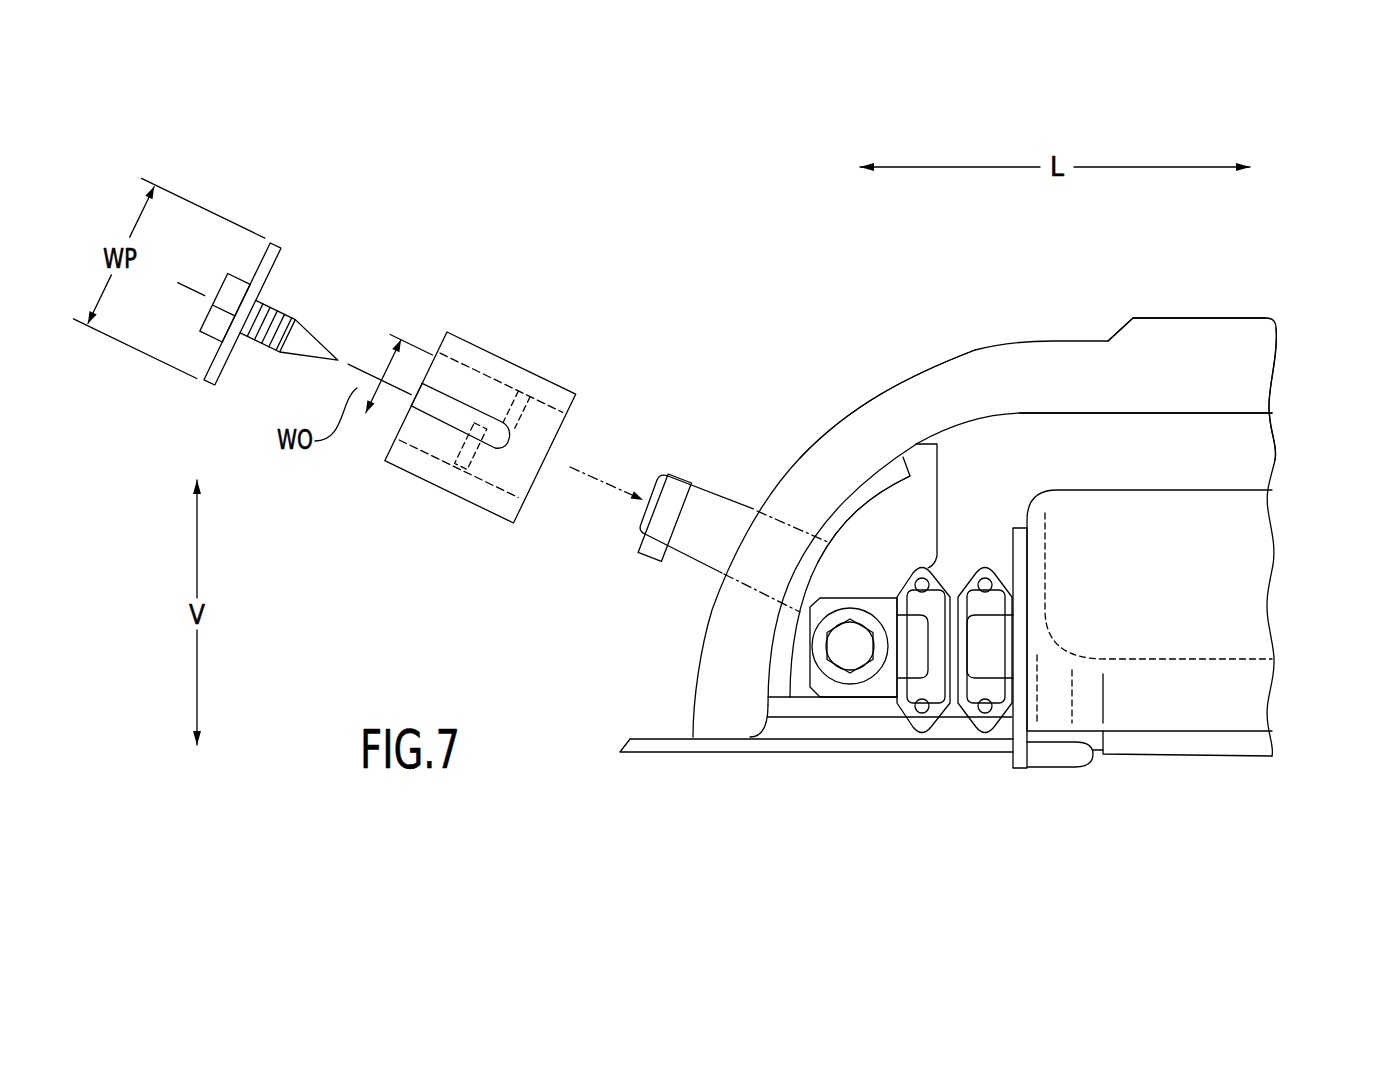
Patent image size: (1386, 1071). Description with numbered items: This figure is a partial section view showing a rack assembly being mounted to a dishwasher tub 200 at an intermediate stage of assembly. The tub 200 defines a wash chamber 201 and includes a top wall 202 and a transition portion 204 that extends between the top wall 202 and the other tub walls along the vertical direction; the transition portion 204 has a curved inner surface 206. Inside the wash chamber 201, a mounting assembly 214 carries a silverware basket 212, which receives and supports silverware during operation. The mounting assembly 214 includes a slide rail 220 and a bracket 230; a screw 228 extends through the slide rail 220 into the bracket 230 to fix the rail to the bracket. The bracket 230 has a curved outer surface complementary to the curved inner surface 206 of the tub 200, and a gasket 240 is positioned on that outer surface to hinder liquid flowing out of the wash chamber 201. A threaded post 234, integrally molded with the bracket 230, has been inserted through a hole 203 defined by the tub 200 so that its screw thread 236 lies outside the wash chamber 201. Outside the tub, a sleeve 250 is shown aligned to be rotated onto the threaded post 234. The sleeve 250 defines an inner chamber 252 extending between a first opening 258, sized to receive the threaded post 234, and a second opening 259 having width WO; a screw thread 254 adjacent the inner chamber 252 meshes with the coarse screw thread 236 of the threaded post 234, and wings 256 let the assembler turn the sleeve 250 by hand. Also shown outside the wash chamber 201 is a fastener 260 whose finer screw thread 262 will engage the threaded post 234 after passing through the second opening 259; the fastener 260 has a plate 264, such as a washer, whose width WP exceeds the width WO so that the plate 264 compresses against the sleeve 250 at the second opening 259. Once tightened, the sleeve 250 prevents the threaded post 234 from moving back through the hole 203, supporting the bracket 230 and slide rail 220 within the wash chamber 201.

The tub 200 is at (1285, 342).
The wash chamber 201 is at (1221, 447).
The top wall 202 is at (1200, 360).
The hole 203 is at (750, 588).
The transition portions 204 is at (903, 393).
The curved inner surface 206 is at (948, 445).
The silverware basket 212 is at (1222, 691).
The mounting assembly 214 is at (972, 533).
The slide rail 220 is at (922, 722).
The screw 228 is at (848, 652).
The bracket 230 is at (920, 501).
The threaded post 234 is at (703, 552).
The screw thread 236 is at (680, 490).
The gasket 240 is at (876, 480).
The sleeve 250 is at (462, 340).
The inner chamber 252 is at (517, 463).
The screw thread 254 is at (508, 396).
The wings 256 is at (450, 415).
The first opening 258 is at (559, 440).
The second opening 259 is at (406, 420).
The fastener 260 is at (229, 292).
The screw thread 262 is at (285, 325).
The plate 264 is at (274, 245).